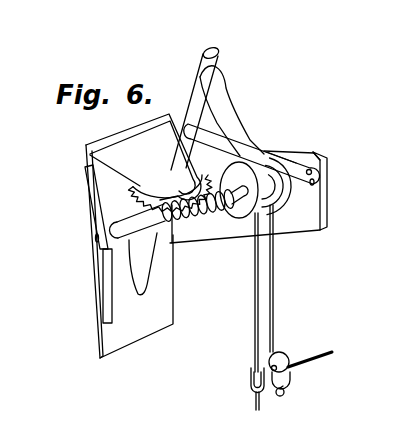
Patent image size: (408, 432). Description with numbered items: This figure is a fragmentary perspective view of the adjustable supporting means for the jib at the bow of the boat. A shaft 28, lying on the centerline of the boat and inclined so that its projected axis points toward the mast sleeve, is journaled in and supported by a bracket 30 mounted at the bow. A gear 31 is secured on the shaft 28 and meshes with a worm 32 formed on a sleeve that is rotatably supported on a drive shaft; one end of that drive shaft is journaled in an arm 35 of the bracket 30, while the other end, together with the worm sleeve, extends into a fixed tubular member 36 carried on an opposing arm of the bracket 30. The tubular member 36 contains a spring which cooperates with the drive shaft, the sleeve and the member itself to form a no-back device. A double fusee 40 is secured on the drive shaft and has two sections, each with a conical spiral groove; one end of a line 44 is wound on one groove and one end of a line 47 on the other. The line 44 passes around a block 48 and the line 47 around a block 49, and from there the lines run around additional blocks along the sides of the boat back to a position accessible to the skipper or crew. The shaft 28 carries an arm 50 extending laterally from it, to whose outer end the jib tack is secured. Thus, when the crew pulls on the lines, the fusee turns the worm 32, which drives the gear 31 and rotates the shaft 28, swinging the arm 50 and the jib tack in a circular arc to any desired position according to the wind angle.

The shaft 28 is at (195, 83).
The bracket 30 is at (72, 193).
The gear 31 is at (134, 202).
The worm 32 is at (191, 220).
The arm of bracket 35 is at (330, 213).
The tubular member 36 is at (122, 229).
The double fusee 40 is at (247, 214).
The line 44 is at (275, 285).
The line 47 is at (256, 290).
The block 48 is at (287, 350).
The block 49 is at (251, 370).
The arm 50 is at (280, 167).